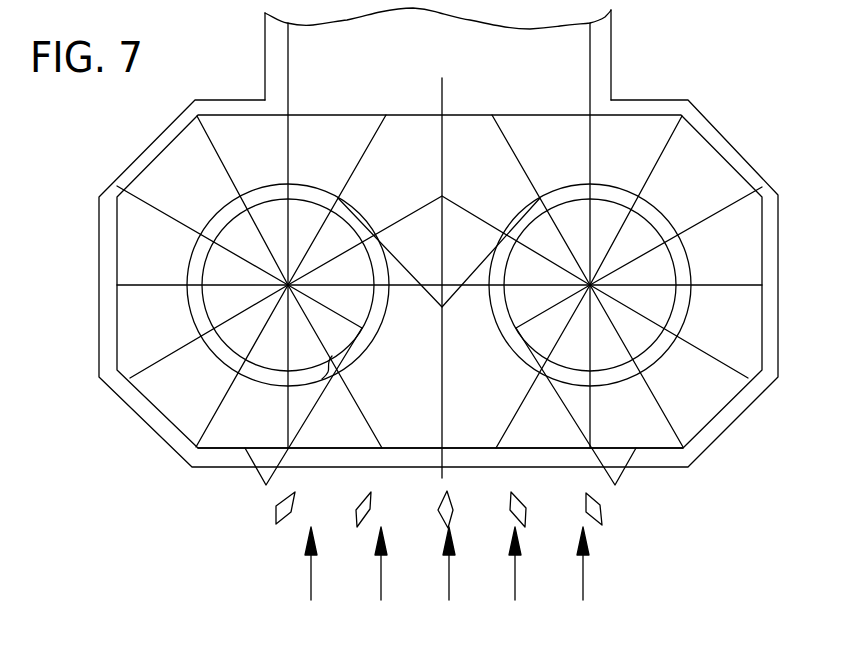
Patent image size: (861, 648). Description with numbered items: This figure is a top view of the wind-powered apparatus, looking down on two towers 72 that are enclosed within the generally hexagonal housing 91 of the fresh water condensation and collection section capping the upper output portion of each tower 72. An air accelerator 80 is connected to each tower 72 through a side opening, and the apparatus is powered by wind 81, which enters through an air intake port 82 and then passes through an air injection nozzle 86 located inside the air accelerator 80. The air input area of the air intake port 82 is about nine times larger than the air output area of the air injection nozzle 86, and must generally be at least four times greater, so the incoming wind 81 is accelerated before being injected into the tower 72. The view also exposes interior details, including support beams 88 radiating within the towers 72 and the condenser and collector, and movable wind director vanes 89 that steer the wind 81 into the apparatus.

The tower 72 is at (195, 319).
The air accelerator 80 is at (413, 414).
The wind 81 is at (303, 587).
The air intake port 82 is at (510, 448).
The air injection nozzle 86 is at (350, 222).
The support beams 88 is at (366, 152).
The movable wind director vanes 89 is at (272, 512).
The hexagonal housing 91 is at (93, 212).